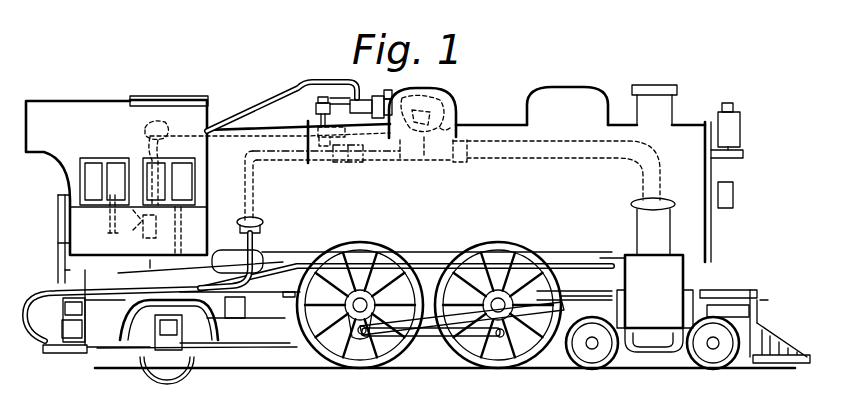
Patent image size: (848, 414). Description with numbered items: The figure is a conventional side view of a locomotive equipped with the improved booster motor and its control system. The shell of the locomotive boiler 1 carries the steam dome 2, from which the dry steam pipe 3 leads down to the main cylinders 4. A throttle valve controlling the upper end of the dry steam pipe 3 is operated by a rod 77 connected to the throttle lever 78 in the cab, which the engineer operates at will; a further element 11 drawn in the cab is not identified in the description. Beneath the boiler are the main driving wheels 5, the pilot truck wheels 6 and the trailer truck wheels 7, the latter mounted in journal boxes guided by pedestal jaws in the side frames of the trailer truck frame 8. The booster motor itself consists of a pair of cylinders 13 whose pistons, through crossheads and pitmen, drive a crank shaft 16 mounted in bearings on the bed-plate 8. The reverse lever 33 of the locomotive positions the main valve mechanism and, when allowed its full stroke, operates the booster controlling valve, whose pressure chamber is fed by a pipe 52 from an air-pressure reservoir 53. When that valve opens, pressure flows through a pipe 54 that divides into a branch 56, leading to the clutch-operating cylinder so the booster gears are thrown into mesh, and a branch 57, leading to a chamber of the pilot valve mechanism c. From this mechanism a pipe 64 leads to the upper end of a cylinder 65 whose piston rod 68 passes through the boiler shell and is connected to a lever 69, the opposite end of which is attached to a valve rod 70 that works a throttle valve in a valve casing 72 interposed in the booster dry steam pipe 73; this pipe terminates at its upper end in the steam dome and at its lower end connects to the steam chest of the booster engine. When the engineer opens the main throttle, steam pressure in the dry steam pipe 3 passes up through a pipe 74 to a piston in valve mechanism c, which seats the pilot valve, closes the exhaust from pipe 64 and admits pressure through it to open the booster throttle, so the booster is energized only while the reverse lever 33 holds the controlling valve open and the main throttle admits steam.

The shell of locomotive boiler 1 is at (508, 224).
The steam dome 2 is at (442, 99).
The dry steam pipe 3 is at (544, 152).
The main cylinders 4 is at (646, 275).
The main driving wheels 5 is at (382, 360).
The pilot truck wheels 6 is at (597, 355).
The trailer truck wheels 7 is at (173, 360).
The trailer truck frame 8 is at (253, 347).
The valve in cab 11 is at (134, 230).
The booster motor cylinders 13 is at (53, 340).
The crank shaft 16 is at (424, 97).
The reverse lever 33 is at (110, 216).
The pipe 52 is at (150, 260).
The air-pressure reservoir 53 is at (297, 253).
The pipe 54 is at (150, 215).
The branch pipe 56 is at (182, 232).
The branch pipe 57 is at (240, 110).
The pipe 64 is at (356, 80).
The cylinder 65 is at (318, 105).
The piston rod 68 is at (318, 118).
The lever 69 is at (328, 146).
The valve rod 70 is at (346, 133).
The valve casing 72 is at (350, 163).
The dry steam pipe 73 is at (37, 290).
The pipe 74 is at (442, 123).
The rod 77 is at (235, 142).
The throttle lever 78 is at (167, 127).
The valve mechanism C c is at (371, 96).